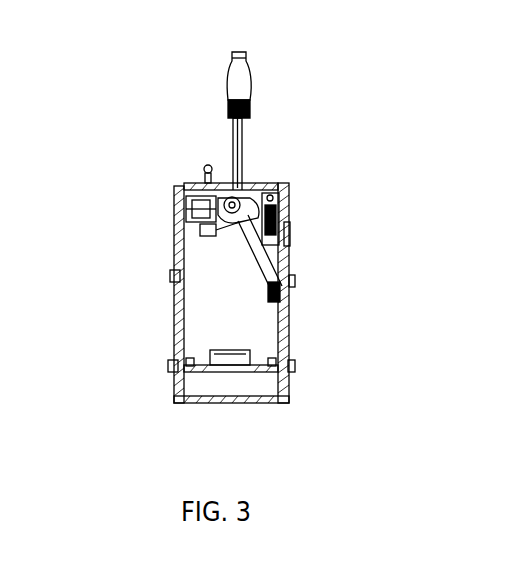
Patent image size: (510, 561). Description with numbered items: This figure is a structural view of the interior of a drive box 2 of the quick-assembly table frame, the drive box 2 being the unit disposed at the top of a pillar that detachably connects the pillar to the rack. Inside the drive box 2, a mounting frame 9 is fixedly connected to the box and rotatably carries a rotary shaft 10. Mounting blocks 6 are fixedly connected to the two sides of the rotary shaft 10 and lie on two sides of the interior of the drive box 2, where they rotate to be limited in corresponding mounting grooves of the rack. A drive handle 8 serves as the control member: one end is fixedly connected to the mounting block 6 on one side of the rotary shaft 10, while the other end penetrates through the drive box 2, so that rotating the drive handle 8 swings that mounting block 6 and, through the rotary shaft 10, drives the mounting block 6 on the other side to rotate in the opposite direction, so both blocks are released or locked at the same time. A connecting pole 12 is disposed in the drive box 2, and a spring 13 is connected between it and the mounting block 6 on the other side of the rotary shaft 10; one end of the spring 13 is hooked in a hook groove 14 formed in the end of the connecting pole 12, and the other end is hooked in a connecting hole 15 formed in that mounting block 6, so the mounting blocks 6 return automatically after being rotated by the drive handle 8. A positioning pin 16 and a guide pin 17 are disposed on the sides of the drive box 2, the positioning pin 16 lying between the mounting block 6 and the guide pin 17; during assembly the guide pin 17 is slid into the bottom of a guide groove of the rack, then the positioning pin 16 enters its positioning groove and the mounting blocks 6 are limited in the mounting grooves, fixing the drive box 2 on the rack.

The drive box 2 is at (287, 390).
The mounting block 6 is at (185, 208).
The drive handle 8 is at (203, 170).
The mounting frame 9 is at (205, 233).
The rotary shaft 10 is at (222, 170).
The connecting pole 12 is at (288, 210).
The spring 13 is at (288, 217).
The hook groove 14 is at (290, 200).
The connecting hole 15 is at (290, 242).
The positioning pin 16 is at (170, 276).
The guide pin 17 is at (168, 367).